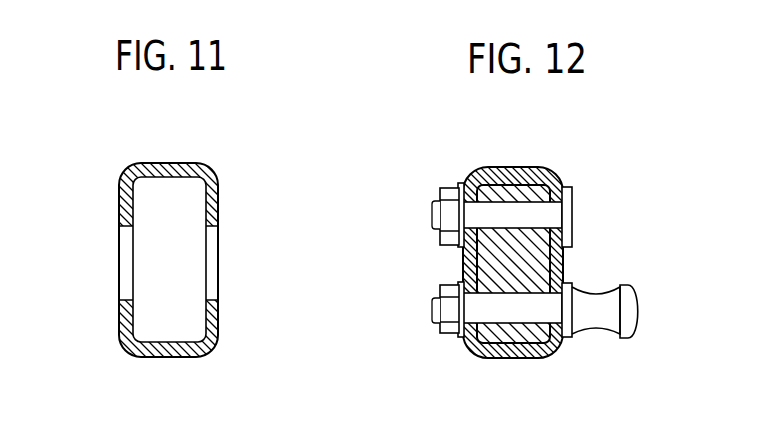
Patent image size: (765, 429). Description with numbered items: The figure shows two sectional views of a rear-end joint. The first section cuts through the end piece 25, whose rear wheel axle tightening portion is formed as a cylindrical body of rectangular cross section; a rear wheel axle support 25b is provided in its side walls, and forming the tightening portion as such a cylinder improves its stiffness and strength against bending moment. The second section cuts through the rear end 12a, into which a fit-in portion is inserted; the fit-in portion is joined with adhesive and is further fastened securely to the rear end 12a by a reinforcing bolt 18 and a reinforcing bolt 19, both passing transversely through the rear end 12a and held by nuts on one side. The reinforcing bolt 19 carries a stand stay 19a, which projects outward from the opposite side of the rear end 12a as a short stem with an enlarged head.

In FIG. 11, the end piece 25 is at (200, 167).
In FIG. 12, the end piece 25 is at (560, 268).
In FIG. 11, the rear wheel axle support 25b is at (128, 255).
In FIG. 12, the rear end 12a is at (541, 177).
In FIG. 12, the reinforcing bolt 18 is at (432, 217).
In FIG. 12, the reinforcing bolt 19 is at (437, 312).
In FIG. 12, the stand stay 19a is at (595, 298).